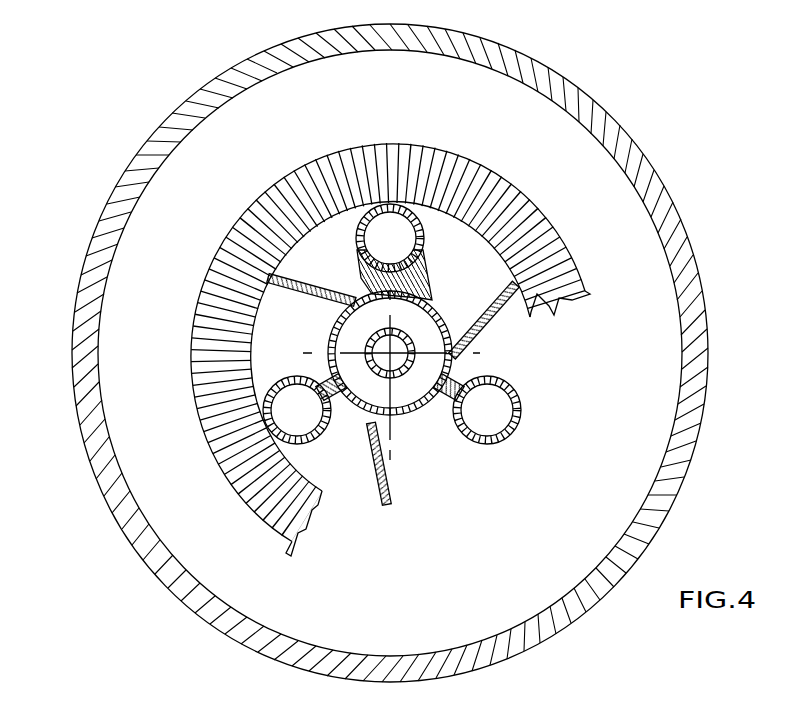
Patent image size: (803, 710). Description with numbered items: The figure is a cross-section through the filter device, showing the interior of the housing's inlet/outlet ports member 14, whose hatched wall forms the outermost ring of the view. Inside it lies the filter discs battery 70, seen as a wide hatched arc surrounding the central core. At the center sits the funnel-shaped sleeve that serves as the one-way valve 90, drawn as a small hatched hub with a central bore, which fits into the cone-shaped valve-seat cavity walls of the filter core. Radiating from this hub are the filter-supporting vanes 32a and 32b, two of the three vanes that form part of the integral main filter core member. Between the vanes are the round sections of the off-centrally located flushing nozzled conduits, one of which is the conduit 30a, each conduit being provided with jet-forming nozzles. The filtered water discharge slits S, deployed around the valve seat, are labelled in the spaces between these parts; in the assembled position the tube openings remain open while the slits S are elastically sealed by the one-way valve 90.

The inlet/outlet ports member 14 is at (642, 177).
The filter discs battery 70 is at (256, 222).
The flushing nozzled conduit 30a is at (420, 205).
The filter-supporting vane 32a is at (495, 326).
The filter-supporting vane 32b is at (386, 505).
The one-way valve 90 is at (391, 375).
The filtered water discharge slits S is at (427, 292).